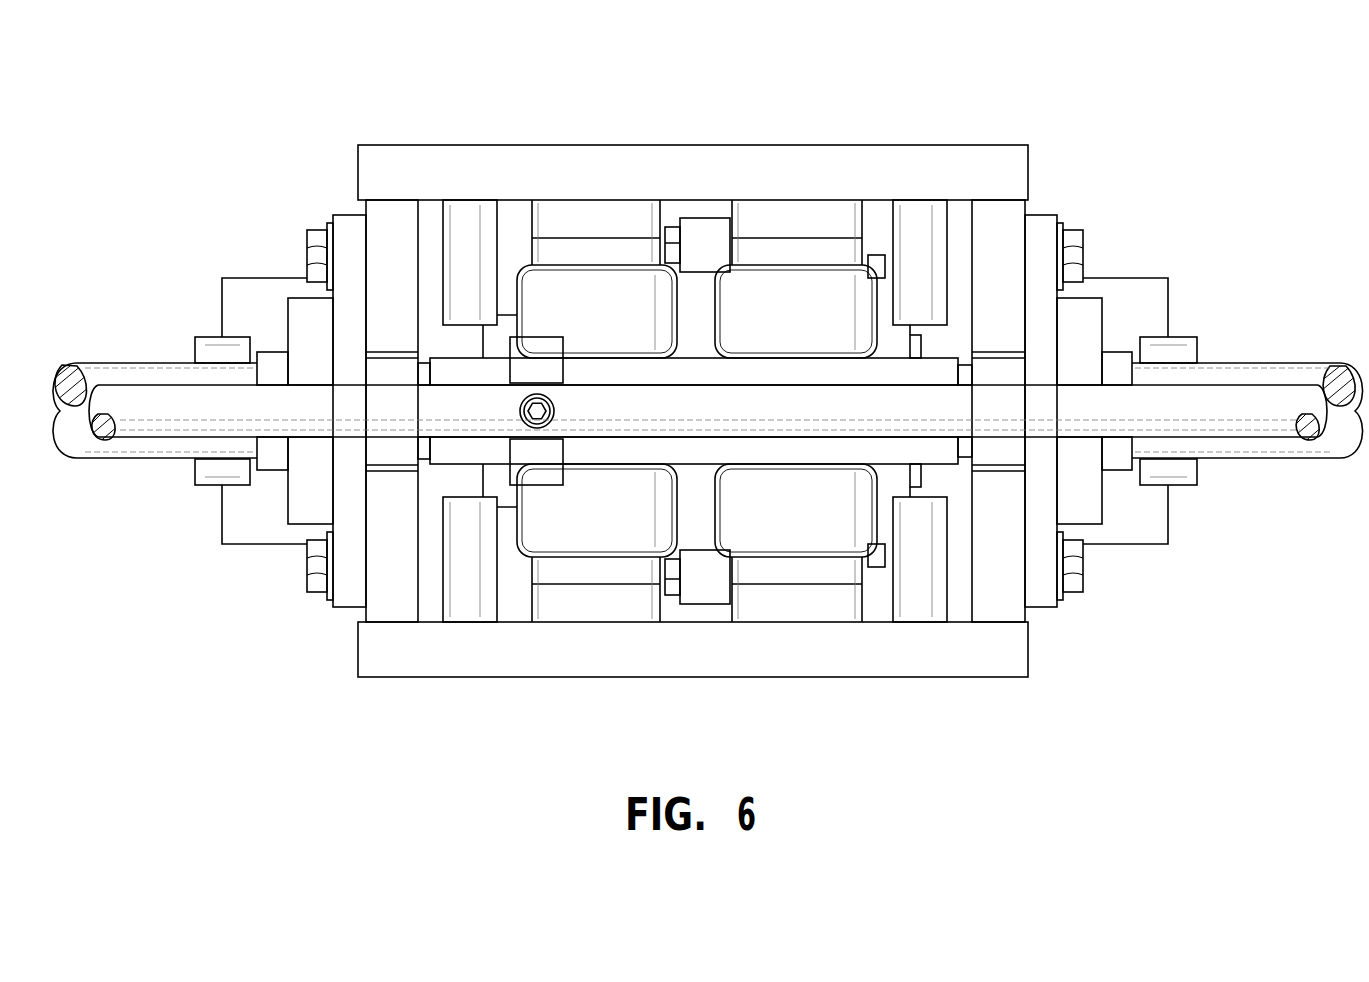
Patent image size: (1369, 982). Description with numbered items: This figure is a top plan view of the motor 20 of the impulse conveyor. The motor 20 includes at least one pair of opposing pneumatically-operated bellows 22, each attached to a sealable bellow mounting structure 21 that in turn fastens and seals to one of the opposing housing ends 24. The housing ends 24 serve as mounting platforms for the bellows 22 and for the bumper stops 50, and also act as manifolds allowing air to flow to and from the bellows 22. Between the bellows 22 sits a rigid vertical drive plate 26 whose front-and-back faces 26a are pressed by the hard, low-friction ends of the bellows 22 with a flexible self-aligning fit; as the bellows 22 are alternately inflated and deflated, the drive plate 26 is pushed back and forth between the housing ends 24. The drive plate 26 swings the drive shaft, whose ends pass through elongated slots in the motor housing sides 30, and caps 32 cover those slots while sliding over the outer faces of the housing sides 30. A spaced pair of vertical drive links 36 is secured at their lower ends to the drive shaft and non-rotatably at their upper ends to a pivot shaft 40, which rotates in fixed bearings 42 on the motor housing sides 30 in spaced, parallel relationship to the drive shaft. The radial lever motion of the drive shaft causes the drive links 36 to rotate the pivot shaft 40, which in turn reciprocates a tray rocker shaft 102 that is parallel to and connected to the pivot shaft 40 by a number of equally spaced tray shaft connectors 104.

The motor 20 is at (1072, 138).
The bellow mounting structures 21 is at (623, 212).
The bellows 22 is at (597, 287).
The housing ends 24 is at (683, 172).
The drive plate 26 is at (823, 370).
The front-and-back faces 26a is at (735, 357).
The motor housing sides 30 is at (393, 608).
The caps 32 is at (252, 530).
The drive links 36 is at (212, 355).
The pivot shaft 40 is at (1210, 373).
The fixed bearings 42 is at (1082, 312).
The bumper stops 50 is at (470, 218).
The tray rocker shaft 102 is at (1250, 402).
The tray shaft connectors 104 is at (542, 357).